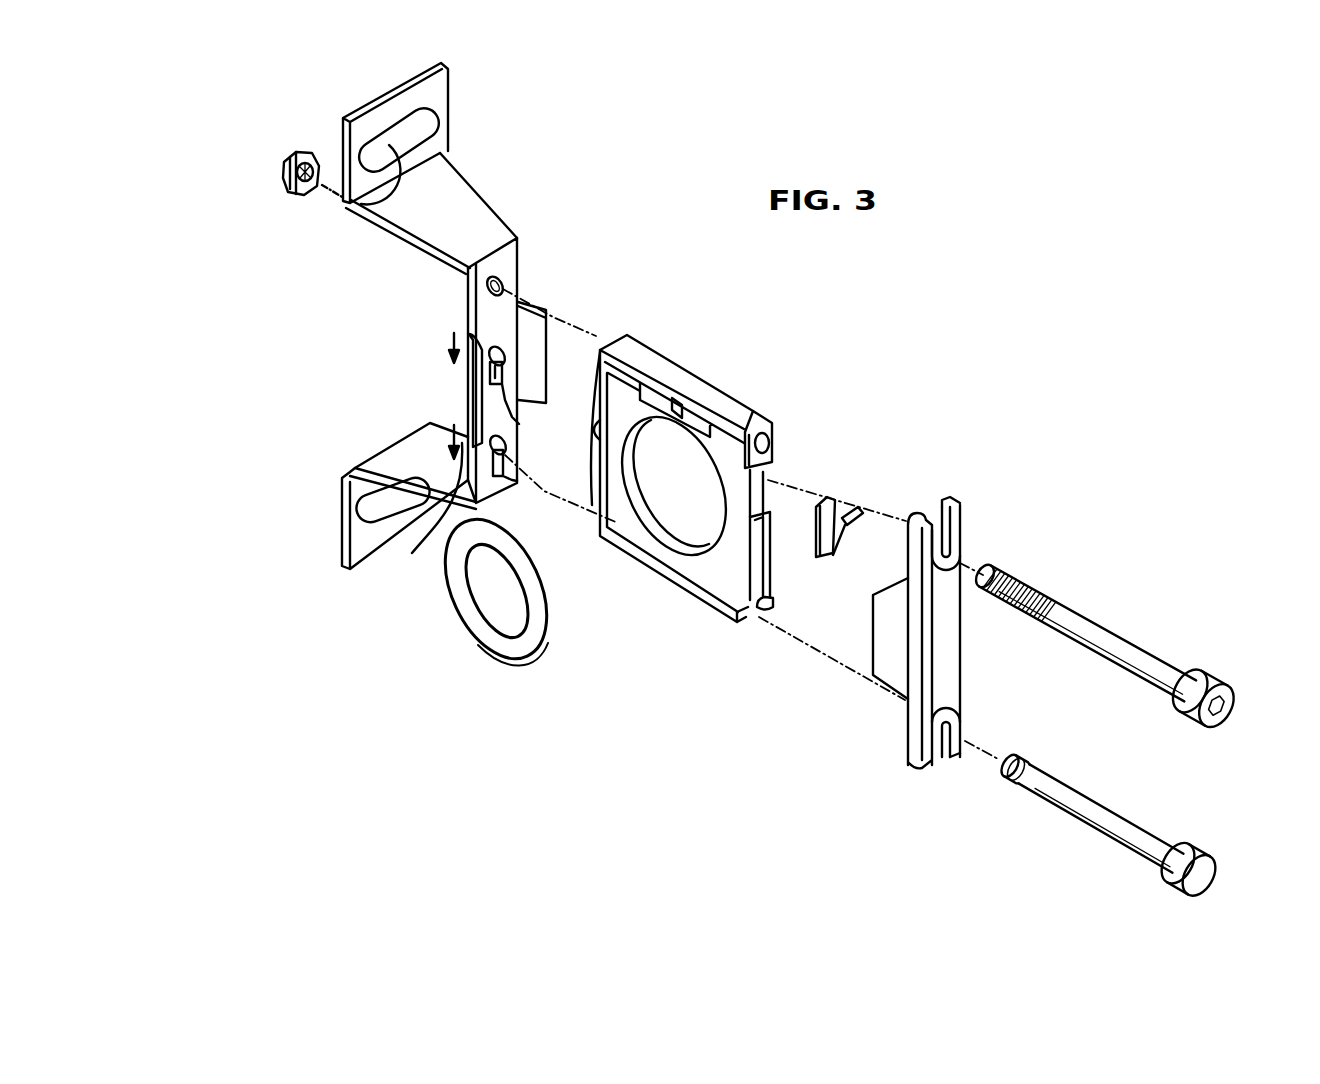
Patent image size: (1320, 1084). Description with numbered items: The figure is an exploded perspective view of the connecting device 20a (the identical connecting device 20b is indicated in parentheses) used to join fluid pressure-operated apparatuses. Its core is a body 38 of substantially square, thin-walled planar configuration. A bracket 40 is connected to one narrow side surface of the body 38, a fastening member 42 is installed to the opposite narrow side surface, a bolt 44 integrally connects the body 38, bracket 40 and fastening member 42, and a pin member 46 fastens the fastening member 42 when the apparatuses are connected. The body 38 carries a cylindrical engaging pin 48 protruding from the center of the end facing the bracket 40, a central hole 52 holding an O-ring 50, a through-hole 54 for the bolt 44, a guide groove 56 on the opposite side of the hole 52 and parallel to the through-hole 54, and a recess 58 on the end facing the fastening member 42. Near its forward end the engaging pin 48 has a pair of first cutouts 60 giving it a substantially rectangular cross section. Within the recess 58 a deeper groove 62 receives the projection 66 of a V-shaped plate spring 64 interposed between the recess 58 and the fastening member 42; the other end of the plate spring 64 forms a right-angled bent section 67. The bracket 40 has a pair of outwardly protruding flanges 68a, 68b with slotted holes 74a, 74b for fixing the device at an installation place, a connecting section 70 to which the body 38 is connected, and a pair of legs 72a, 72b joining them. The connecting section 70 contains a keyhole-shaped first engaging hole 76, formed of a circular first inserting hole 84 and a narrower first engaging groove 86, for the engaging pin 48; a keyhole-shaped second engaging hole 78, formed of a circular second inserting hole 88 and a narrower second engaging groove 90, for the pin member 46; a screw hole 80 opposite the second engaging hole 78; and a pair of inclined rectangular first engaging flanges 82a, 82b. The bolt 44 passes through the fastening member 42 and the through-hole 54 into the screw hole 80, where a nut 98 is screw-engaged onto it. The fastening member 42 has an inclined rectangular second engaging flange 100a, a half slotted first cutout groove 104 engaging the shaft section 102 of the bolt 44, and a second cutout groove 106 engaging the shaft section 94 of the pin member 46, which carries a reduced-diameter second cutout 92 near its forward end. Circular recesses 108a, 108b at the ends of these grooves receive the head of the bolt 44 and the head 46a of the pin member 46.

The connecting device 20a is at (873, 328).
The optical unit 20b is at (931, 328).
The body 38 is at (713, 503).
The bracket 40 is at (457, 343).
The fastening member 42 is at (948, 652).
The bolt 44 is at (1106, 647).
The pin member 46 is at (1091, 837).
The head of the pin member 46a is at (1172, 876).
The engaging pin 48 is at (624, 336).
The O-ring 50 is at (545, 625).
The hole 52 is at (677, 410).
The through-hole 54 is at (780, 405).
The guide groove 56 is at (750, 614).
The recess 58 is at (770, 473).
The first cutouts 60 is at (592, 512).
The groove 62 is at (757, 437).
The plate spring 64 is at (832, 556).
The projection 66 is at (816, 515).
The bent section 67 is at (859, 506).
The flange 68a is at (410, 166).
The flange 68b is at (361, 533).
The connecting section 70 is at (533, 367).
The leg 72a is at (477, 203).
The leg 72b is at (408, 455).
The slotted hole 74a is at (362, 210).
The slotted hole 74b is at (372, 517).
The first engaging hole 76 is at (467, 334).
The second engaging hole 78 is at (424, 513).
The screw hole 80 is at (503, 284).
The first engaging flange 82a is at (471, 393).
The first engaging flange 82b is at (550, 316).
The first inserting hole 84 is at (505, 354).
The first engaging groove 86 is at (520, 421).
The second inserting hole 88 is at (516, 474).
The second engaging groove 90 is at (492, 492).
The second cutout 92 is at (1012, 778).
The shaft section of the pin member 94 is at (1085, 815).
The nut 98 is at (278, 178).
The second engaging flange 100a is at (884, 662).
The shaft section of the bolt 102 is at (1103, 634).
The first cutout groove 104 is at (997, 506).
The second cutout groove 106 is at (978, 770).
The circular recess 108a is at (955, 548).
The circular recess 108b is at (960, 720).